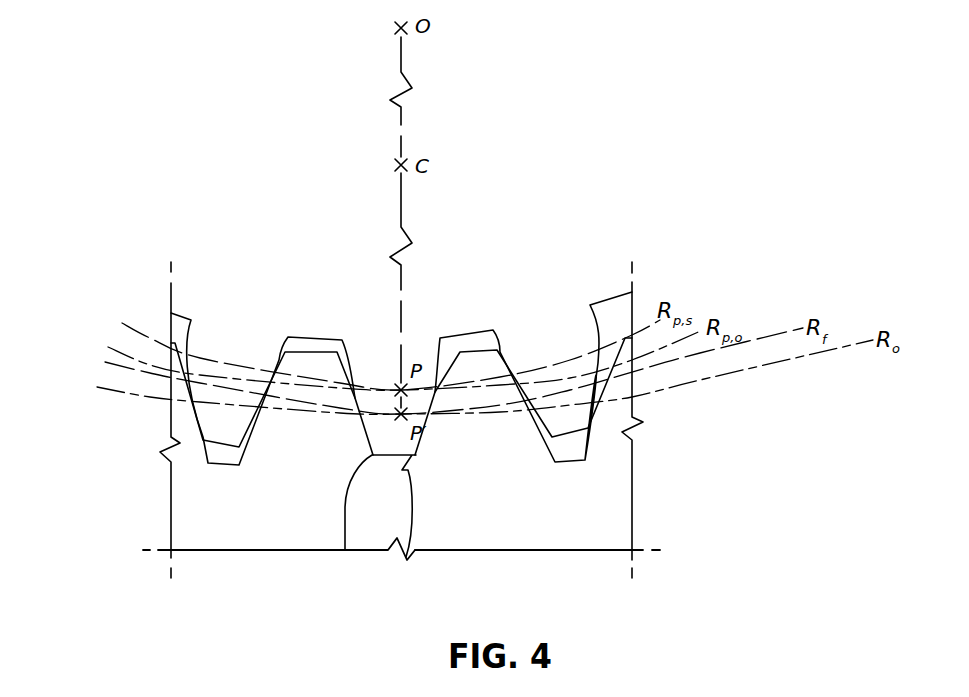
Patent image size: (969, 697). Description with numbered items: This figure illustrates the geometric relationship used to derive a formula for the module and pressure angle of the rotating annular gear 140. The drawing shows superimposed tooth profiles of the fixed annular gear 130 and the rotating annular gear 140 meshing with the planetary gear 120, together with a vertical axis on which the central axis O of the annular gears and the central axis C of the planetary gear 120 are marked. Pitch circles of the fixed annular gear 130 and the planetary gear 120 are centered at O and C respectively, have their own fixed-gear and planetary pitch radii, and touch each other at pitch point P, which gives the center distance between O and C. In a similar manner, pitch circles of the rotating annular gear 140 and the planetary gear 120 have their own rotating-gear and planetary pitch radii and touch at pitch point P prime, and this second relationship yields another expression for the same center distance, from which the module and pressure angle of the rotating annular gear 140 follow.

The planetary gear 120 is at (382, 365).
The fixed annular gear 130 is at (266, 522).
The rotating annular gear 140 is at (525, 518).